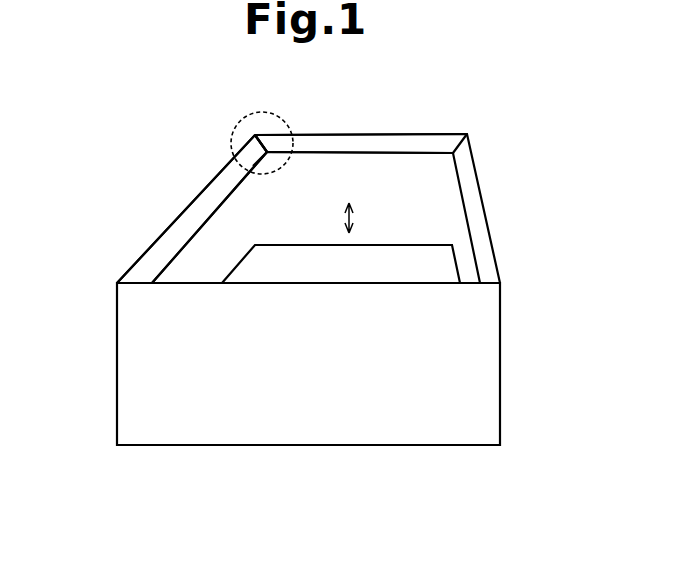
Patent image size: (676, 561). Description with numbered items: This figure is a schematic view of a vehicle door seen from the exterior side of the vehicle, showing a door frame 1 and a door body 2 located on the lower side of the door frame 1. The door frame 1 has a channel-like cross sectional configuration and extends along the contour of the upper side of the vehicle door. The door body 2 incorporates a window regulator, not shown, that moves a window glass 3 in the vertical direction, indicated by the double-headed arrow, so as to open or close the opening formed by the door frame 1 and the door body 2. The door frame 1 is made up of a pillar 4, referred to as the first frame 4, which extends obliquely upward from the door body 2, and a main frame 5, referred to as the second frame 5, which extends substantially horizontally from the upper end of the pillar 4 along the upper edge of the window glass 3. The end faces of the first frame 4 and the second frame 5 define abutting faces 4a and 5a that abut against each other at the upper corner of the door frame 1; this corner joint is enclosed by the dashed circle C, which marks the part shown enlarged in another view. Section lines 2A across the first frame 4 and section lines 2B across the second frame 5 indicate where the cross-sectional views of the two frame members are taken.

The door frame 1 is at (486, 256).
The door body 2 is at (116, 365).
The window glass 3 is at (388, 248).
The pillar 4 is at (146, 263).
The main frame 5 is at (390, 142).
The abutting face 4a is at (268, 135).
The abutting face 5a is at (267, 153).
The dashed circle C is at (234, 126).
The section line 2A is at (207, 185).
The section line 2B is at (352, 118).